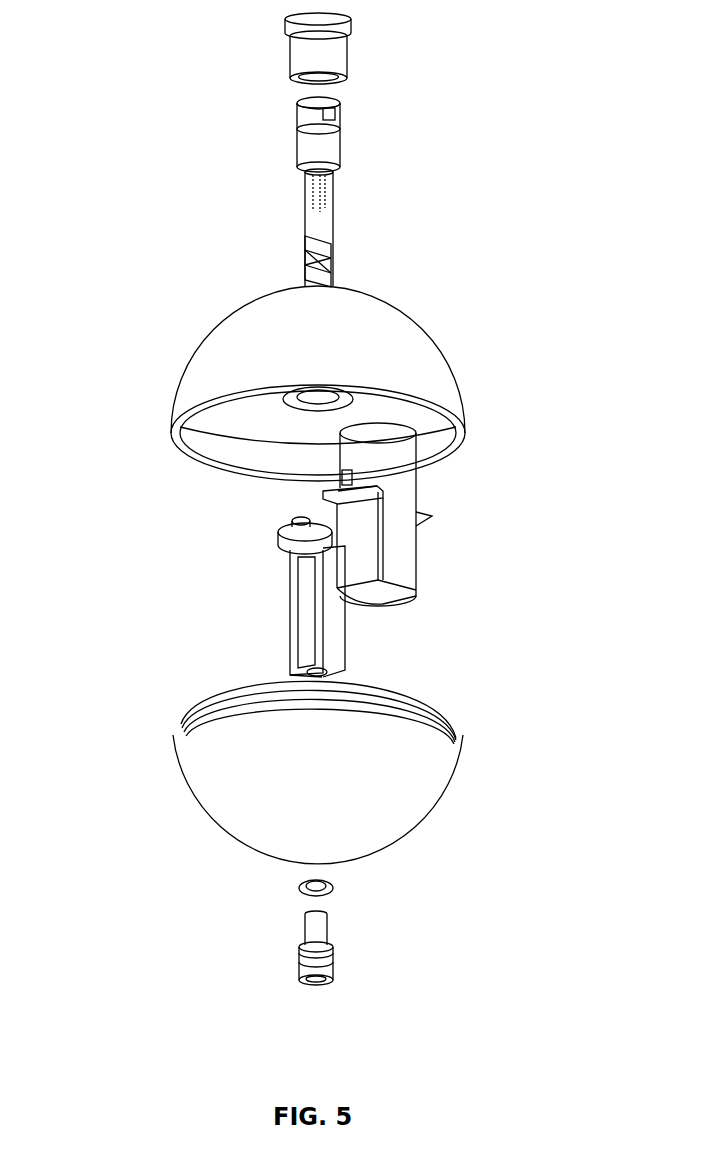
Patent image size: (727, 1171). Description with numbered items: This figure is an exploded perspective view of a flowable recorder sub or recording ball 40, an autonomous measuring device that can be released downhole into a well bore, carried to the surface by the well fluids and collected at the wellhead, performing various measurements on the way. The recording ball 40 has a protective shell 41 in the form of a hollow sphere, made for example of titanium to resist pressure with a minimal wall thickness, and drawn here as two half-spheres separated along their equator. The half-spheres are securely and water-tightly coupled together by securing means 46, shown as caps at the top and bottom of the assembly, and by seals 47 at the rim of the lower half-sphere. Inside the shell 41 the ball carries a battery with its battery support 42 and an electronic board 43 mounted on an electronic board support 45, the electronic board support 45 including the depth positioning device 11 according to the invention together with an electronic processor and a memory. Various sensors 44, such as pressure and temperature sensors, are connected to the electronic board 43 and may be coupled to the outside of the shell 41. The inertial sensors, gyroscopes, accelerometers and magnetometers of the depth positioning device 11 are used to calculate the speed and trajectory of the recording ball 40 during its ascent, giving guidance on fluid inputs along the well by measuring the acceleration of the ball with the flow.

The recording ball 40 is at (108, 234).
The depth positioning device 11 is at (336, 260).
The protective shell 41 is at (425, 360).
The battery support 42 is at (403, 548).
The electronic board 43 is at (310, 221).
The sensors 44 is at (340, 116).
The electronic board support 45 is at (290, 585).
The securing means 46 is at (293, 57).
The seals 47 is at (182, 724).